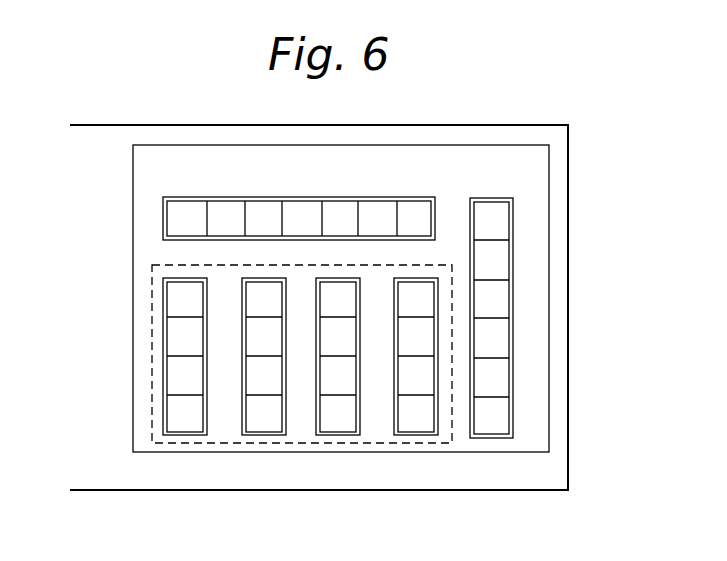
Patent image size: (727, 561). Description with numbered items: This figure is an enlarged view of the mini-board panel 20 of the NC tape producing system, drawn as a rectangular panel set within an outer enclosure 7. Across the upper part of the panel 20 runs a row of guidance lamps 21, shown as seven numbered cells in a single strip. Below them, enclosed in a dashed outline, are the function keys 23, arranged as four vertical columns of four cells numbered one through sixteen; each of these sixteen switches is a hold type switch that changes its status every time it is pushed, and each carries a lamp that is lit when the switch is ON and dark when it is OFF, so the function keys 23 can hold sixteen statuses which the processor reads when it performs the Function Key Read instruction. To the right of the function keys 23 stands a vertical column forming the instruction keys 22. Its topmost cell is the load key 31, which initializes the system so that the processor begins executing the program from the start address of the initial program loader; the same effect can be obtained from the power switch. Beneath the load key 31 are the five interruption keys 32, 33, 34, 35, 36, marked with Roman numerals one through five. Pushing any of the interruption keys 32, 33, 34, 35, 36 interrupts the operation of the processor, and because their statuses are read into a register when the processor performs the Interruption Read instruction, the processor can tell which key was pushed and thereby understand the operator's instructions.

The housing 7 is at (386, 118).
The mini-board panel 20 is at (194, 452).
The guidance lamps 21 is at (320, 186).
The instruction keys 22 is at (513, 222).
The function keys 23 is at (152, 350).
The load key 31 is at (486, 205).
The interruption key 32 is at (503, 270).
The interruption key 33 is at (503, 307).
The interruption key 34 is at (505, 343).
The interruption key 35 is at (505, 382).
The interruption key 36 is at (503, 423).